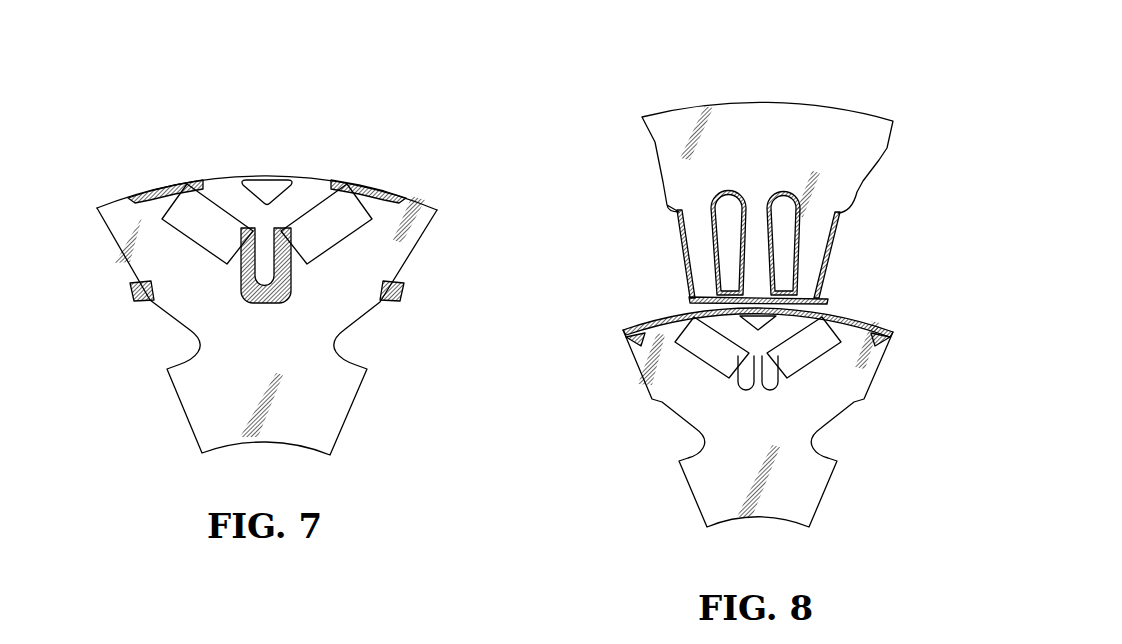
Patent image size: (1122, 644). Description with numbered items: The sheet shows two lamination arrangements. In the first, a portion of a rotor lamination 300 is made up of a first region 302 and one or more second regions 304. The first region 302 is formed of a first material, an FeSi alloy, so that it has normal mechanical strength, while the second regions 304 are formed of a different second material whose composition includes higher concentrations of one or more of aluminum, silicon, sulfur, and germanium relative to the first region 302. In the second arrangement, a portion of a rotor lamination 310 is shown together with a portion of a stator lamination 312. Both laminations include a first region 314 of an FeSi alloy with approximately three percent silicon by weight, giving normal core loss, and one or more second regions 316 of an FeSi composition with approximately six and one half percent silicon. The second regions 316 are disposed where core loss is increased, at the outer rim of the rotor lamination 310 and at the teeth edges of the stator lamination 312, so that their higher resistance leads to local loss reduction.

In FIG. 7, the rotor lamination 300 is at (158, 162).
In FIG. 7, the first region 302 is at (185, 410).
In FIG. 7, the second region 304 is at (190, 180).
In FIG. 8, the rotor lamination 310 is at (648, 308).
In FIG. 8, the stator lamination 312 is at (672, 97).
In FIG. 8, the first region 314 is at (672, 157).
In FIG. 8, the second region 316 is at (686, 247).